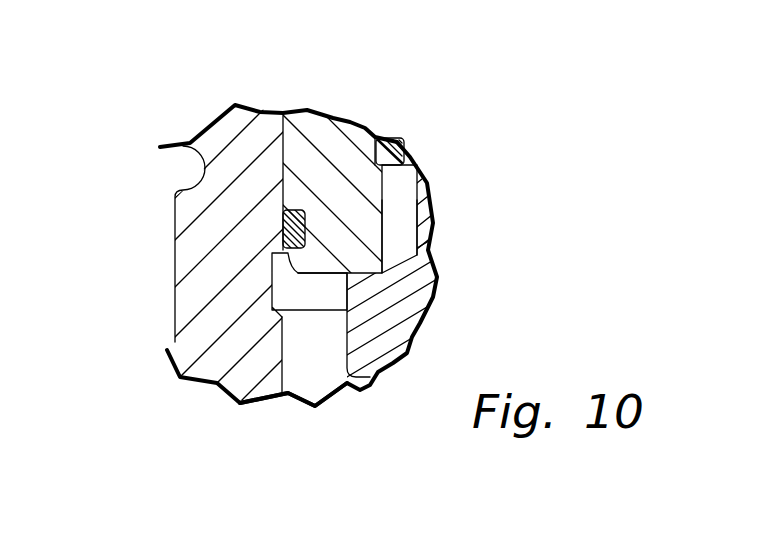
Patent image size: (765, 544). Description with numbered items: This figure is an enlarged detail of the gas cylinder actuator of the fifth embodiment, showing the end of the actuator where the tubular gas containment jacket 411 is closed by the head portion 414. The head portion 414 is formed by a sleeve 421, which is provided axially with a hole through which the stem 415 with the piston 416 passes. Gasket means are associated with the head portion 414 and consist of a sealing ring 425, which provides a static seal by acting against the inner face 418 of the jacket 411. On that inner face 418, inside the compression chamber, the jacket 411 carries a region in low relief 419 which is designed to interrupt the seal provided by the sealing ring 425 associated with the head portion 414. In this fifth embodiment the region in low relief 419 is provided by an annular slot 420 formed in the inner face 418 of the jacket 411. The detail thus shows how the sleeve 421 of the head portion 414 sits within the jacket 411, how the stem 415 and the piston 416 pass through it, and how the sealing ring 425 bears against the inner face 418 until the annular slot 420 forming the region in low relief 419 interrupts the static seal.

The tubular gas containment jacket 411 is at (196, 268).
The head portion 414 is at (370, 123).
The stem 415 is at (425, 213).
The piston 416 is at (365, 364).
The inner face 418 is at (282, 353).
The region in low relief 419 is at (323, 318).
The annular slot 420 is at (283, 288).
The sleeve 421 is at (330, 131).
The sealing ring 425 is at (283, 226).